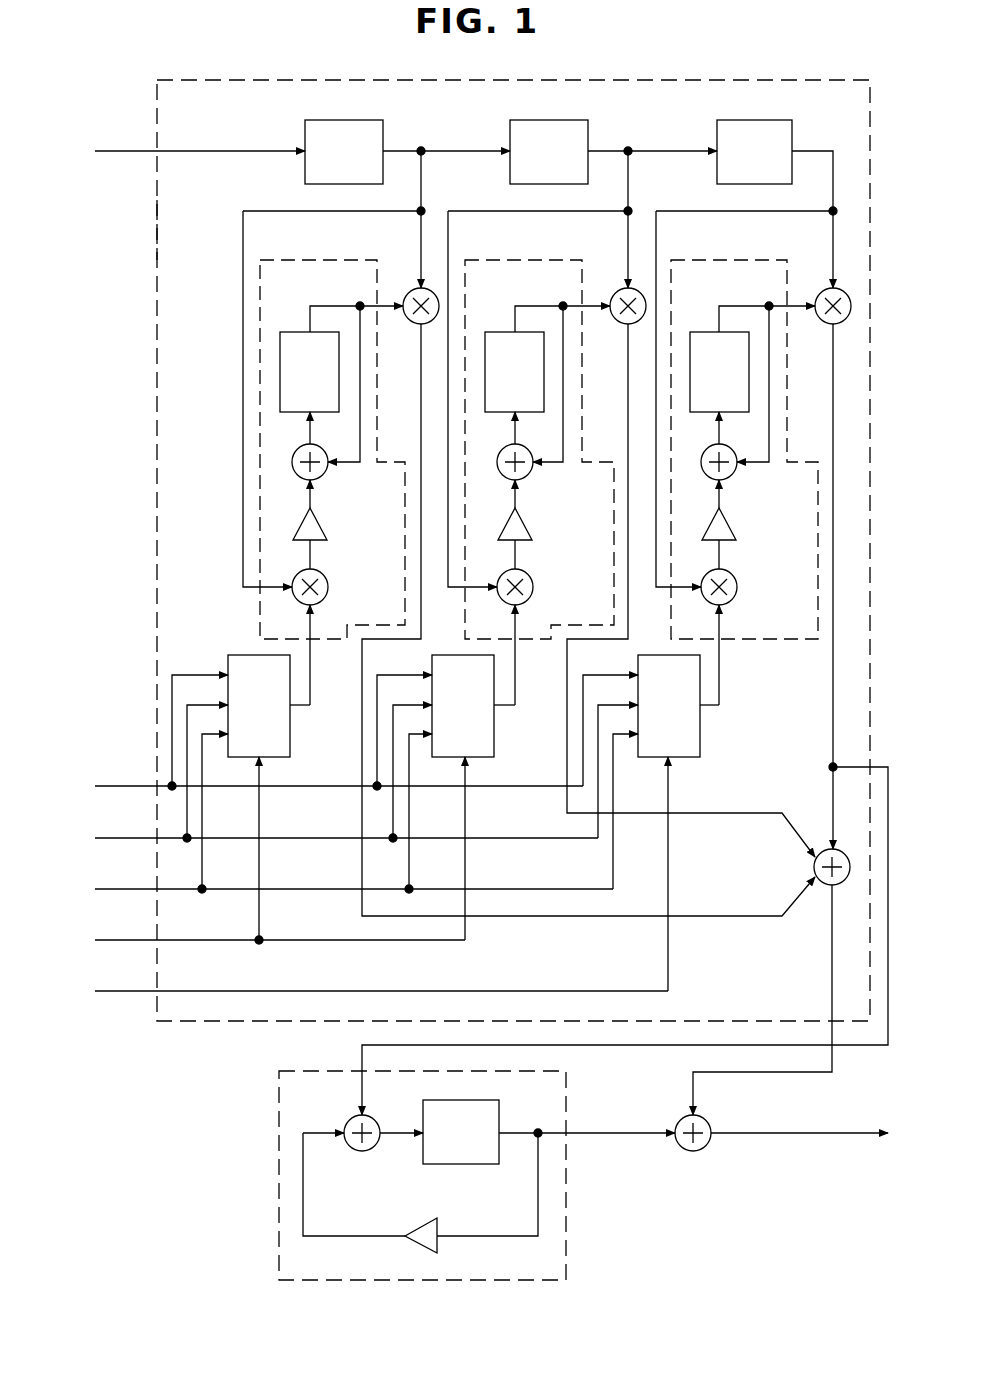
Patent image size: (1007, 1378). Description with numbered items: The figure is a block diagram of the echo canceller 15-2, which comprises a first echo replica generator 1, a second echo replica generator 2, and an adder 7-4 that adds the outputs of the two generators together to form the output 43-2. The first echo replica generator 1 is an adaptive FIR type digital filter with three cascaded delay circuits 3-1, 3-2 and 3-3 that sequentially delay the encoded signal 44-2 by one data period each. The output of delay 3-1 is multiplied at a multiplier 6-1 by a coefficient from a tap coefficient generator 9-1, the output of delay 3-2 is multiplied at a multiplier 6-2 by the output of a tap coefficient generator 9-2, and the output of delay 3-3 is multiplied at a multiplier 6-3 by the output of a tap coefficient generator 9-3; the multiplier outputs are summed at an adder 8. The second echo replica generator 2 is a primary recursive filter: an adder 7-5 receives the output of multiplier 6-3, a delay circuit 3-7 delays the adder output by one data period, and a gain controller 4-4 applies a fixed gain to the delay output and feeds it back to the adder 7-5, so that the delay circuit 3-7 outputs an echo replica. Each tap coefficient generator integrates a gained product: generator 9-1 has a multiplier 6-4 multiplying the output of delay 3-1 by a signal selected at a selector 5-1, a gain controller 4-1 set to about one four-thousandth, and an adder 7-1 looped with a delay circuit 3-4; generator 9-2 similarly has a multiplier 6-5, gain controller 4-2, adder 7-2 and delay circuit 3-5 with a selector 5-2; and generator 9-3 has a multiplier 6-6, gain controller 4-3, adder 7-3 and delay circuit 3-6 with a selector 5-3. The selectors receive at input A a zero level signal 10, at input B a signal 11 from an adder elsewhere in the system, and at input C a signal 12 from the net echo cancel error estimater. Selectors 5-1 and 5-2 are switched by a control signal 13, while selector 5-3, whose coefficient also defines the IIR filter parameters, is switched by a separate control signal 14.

The echo canceller 15-2 is at (160, 47).
The encoded signal 44-2 is at (110, 151).
The first echo replica generator 1 is at (158, 224).
The second echo replica generator 2 is at (279, 1107).
The delay circuit 3-1 is at (302, 128).
The delay circuit 3-2 is at (509, 128).
The delay circuit 3-3 is at (714, 128).
The delay circuit 3-4 is at (292, 330).
The delay circuit 3-5 is at (497, 330).
The delay circuit 3-6 is at (701, 330).
The delay circuit 3-7 is at (470, 1164).
The gain controller 4-1 is at (327, 518).
The gain controller 4-2 is at (532, 518).
The gain controller 4-3 is at (736, 518).
The gain controller 4-4 is at (421, 1224).
The selector 5-1 is at (290, 744).
The selector 5-2 is at (495, 744).
The selector 5-3 is at (711, 744).
The multiplier 6-1 is at (412, 288).
The multiplier 6-2 is at (619, 288).
The multiplier 6-3 is at (824, 288).
The multiplier 6-4 is at (333, 588).
The multiplier 6-5 is at (538, 588).
The multiplier 6-6 is at (743, 588).
The adder 7-1 is at (324, 476).
The adder 7-2 is at (529, 476).
The adder 7-3 is at (734, 476).
The adder 7-4 is at (693, 1152).
The adder 7-5 is at (352, 1118).
The adder 8 is at (814, 866).
The tap coefficient generator 9-1 is at (284, 260).
The tap coefficient generator 9-2 is at (489, 260).
The tap coefficient generator 9-3 is at (695, 260).
The signal of zero level 10 is at (124, 786).
The signal received from the adder 7-8 11 is at (124, 838).
The signal received from the net echo cancel error estimater 12 is at (124, 890).
The control signal 13 is at (124, 942).
The control signal 14 is at (124, 993).
The output signal 43-2 is at (840, 1134).